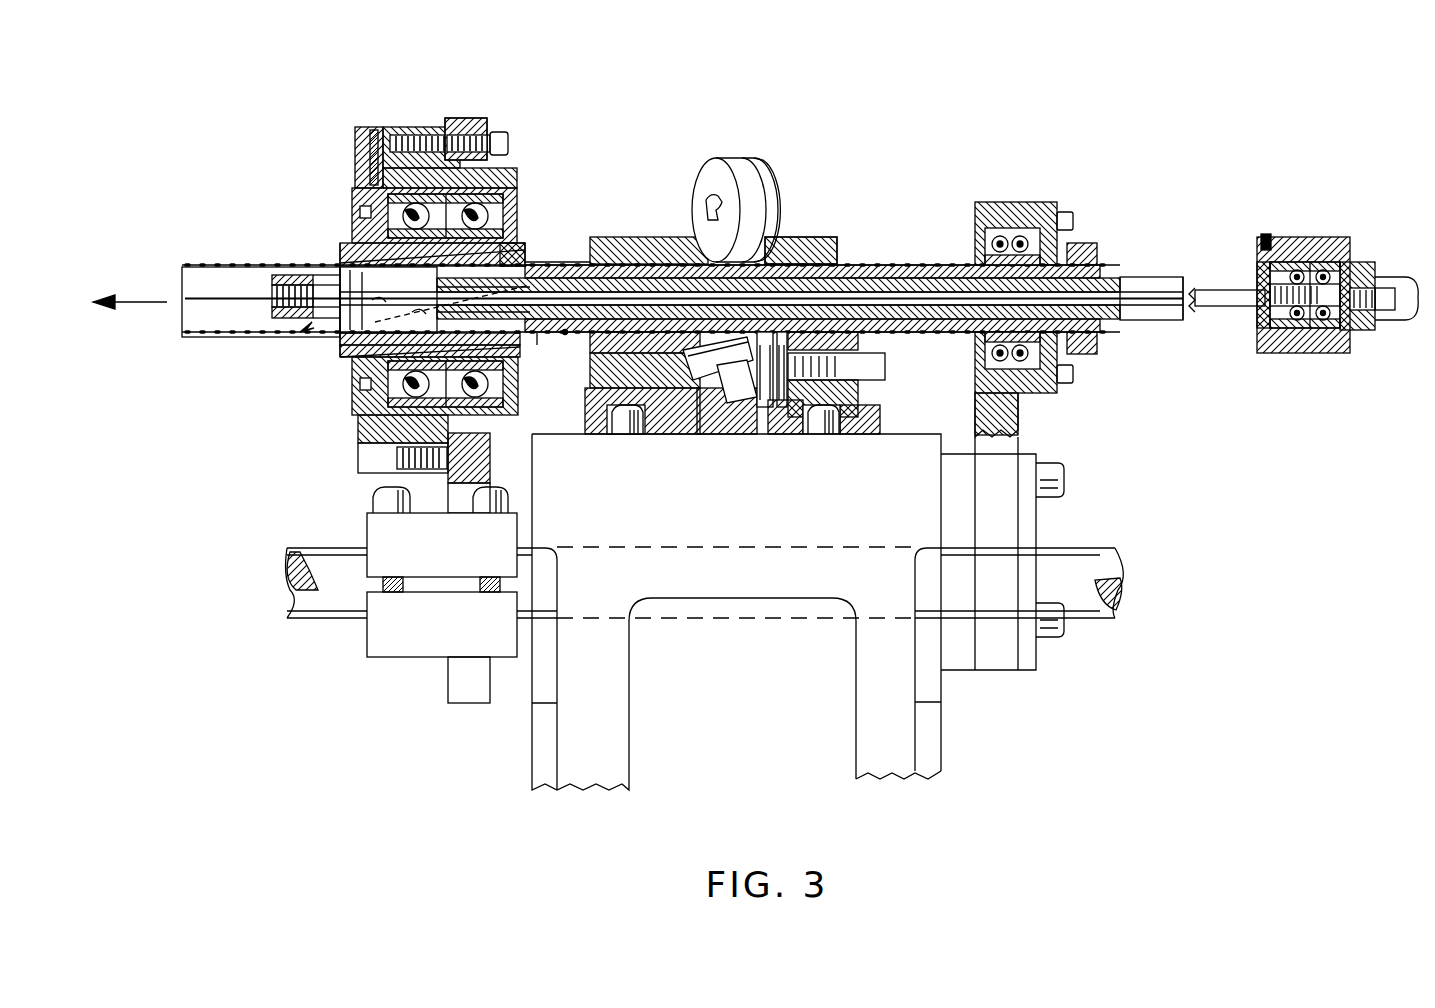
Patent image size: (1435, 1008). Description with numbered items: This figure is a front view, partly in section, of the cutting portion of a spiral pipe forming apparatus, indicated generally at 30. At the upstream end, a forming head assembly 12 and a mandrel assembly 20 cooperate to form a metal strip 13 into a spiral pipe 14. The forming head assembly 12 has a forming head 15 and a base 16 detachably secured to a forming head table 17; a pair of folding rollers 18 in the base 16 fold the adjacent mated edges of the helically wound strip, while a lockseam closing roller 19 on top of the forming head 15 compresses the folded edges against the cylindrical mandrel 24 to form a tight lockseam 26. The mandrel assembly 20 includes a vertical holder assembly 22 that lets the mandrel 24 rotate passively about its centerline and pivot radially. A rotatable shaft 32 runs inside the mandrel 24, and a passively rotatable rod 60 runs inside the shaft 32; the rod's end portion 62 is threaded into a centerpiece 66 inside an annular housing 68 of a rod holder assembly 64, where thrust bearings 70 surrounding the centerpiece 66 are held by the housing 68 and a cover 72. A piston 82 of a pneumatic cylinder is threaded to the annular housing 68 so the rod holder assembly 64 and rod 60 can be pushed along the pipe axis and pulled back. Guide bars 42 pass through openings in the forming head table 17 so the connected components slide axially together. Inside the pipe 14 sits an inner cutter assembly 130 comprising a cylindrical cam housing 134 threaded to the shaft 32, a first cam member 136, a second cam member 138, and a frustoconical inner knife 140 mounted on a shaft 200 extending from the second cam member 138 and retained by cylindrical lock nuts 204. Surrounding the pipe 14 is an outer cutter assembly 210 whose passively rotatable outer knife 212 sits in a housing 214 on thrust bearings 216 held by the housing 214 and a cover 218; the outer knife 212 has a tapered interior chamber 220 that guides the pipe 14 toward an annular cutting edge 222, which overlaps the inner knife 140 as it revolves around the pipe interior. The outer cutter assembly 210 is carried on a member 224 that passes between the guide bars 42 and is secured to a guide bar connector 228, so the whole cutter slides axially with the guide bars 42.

The forming head assembly 12 is at (825, 234).
The metal strip 13 is at (770, 237).
The spiral pipe 14 is at (558, 266).
The forming head 15 is at (608, 237).
The base 16 is at (858, 386).
The forming head table 17 is at (945, 725).
The folding rollers 18 is at (697, 395).
The lockseam closing roller 19 is at (740, 158).
The mandrel assembly 20 is at (1019, 383).
The vertical holder assembly 22 is at (1040, 204).
The cylindrical mandrel 24 is at (853, 265).
The lockseam 26 is at (565, 334).
The spindle assembly 30 is at (622, 124).
The rotatable shaft 32 is at (893, 282).
The guide bars 42 is at (322, 623).
The passively rotatable rod 60 is at (1196, 291).
The end portion 62 is at (1312, 336).
The rod holder assembly 64 is at (1318, 275).
The centerpiece 66 is at (1302, 252).
The annular housing 68 is at (1352, 243).
The thrust bearings 70 is at (1350, 347).
The cover 72 is at (1262, 290).
The piston 82 is at (1390, 318).
The inner cutter assembly 130 is at (320, 337).
The cylindrical cam housing 134 is at (537, 337).
The first cam member 136 is at (350, 357).
The second cam member 138 is at (327, 345).
The inner knife 140 is at (300, 332).
The shaft 200 is at (270, 292).
The cylindrical lock nuts 204 is at (283, 316).
The outer cutter assembly 210 is at (398, 127).
The outer knife 212 is at (340, 262).
The housing 214 is at (515, 180).
The thrust bearings 216 is at (517, 195).
The cover 218 is at (353, 372).
The tapered interior chamber 220 is at (522, 242).
The annular cutting edge 222 is at (338, 270).
The mounting bracket 224 is at (468, 118).
The guide bar connector 228 is at (412, 560).